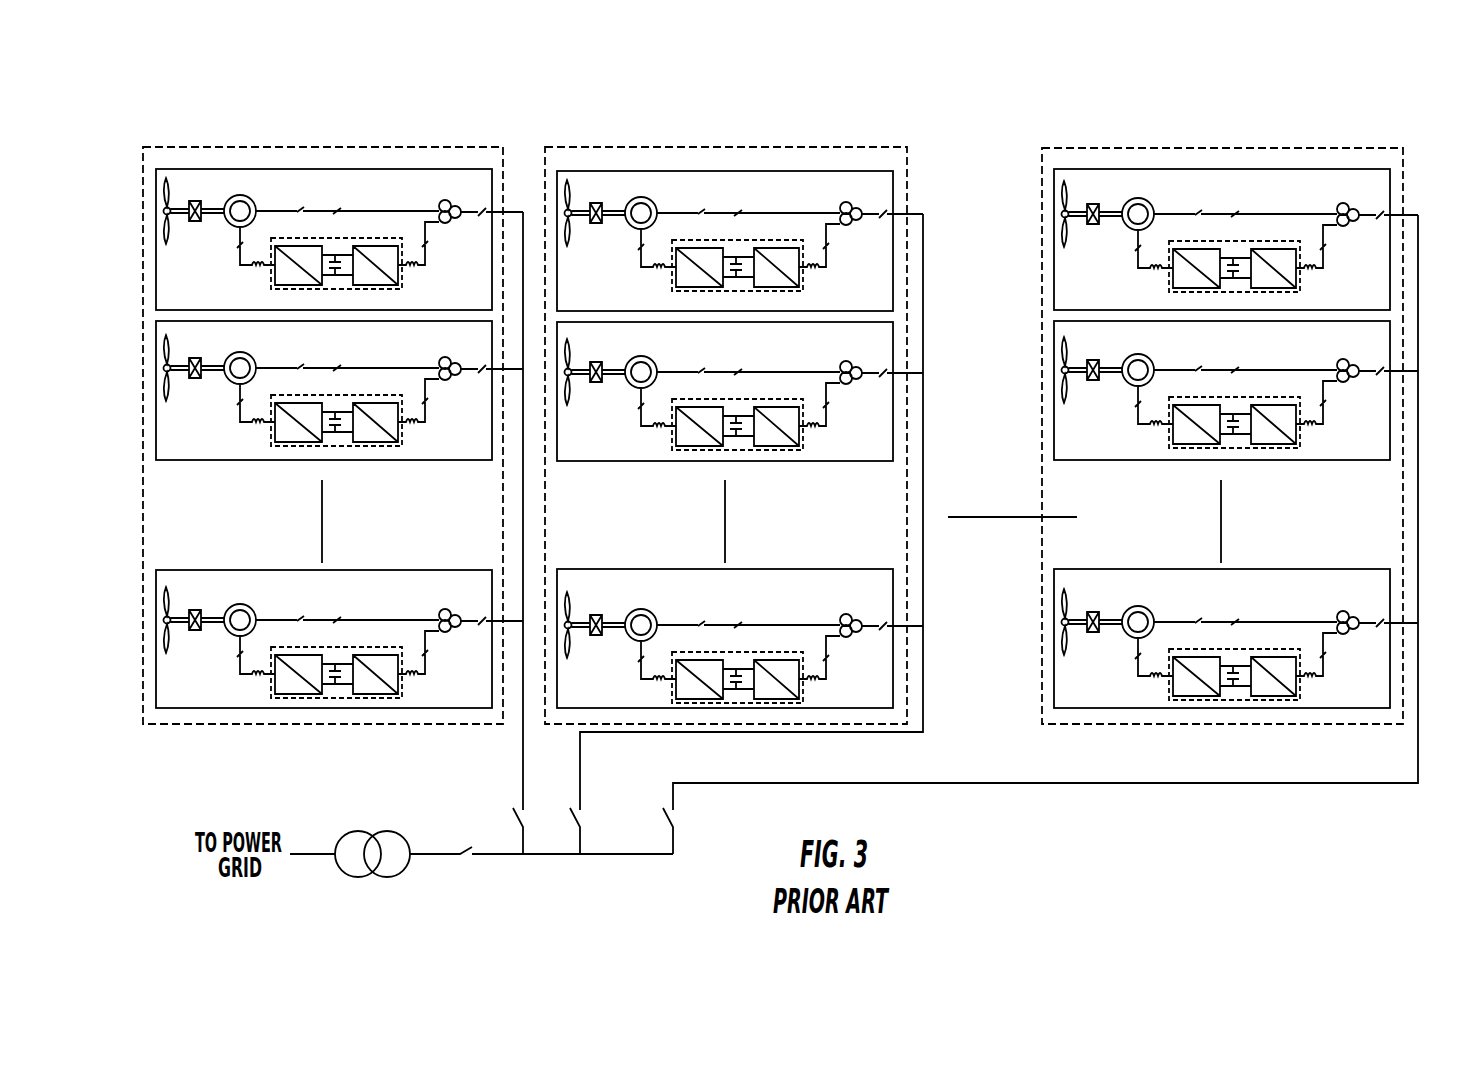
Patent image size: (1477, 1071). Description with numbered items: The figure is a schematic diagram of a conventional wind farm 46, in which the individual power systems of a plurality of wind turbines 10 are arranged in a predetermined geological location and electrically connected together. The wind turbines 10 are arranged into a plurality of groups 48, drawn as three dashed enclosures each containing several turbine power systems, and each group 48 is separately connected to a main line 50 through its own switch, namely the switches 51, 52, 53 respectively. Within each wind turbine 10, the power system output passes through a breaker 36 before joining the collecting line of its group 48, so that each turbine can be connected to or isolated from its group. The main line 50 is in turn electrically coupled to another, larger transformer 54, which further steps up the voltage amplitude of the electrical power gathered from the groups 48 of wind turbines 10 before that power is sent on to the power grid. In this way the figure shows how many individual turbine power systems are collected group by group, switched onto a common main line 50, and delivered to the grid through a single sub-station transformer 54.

The wind turbine 10 is at (153, 258).
The turbine breaker 36 is at (476, 205).
The wind farm 46 is at (1438, 207).
The group 48 is at (218, 726).
The main line 50 is at (645, 857).
The switch 51 is at (509, 818).
The switch 52 is at (566, 818).
The switch 53 is at (659, 818).
The transformer 54 is at (372, 829).